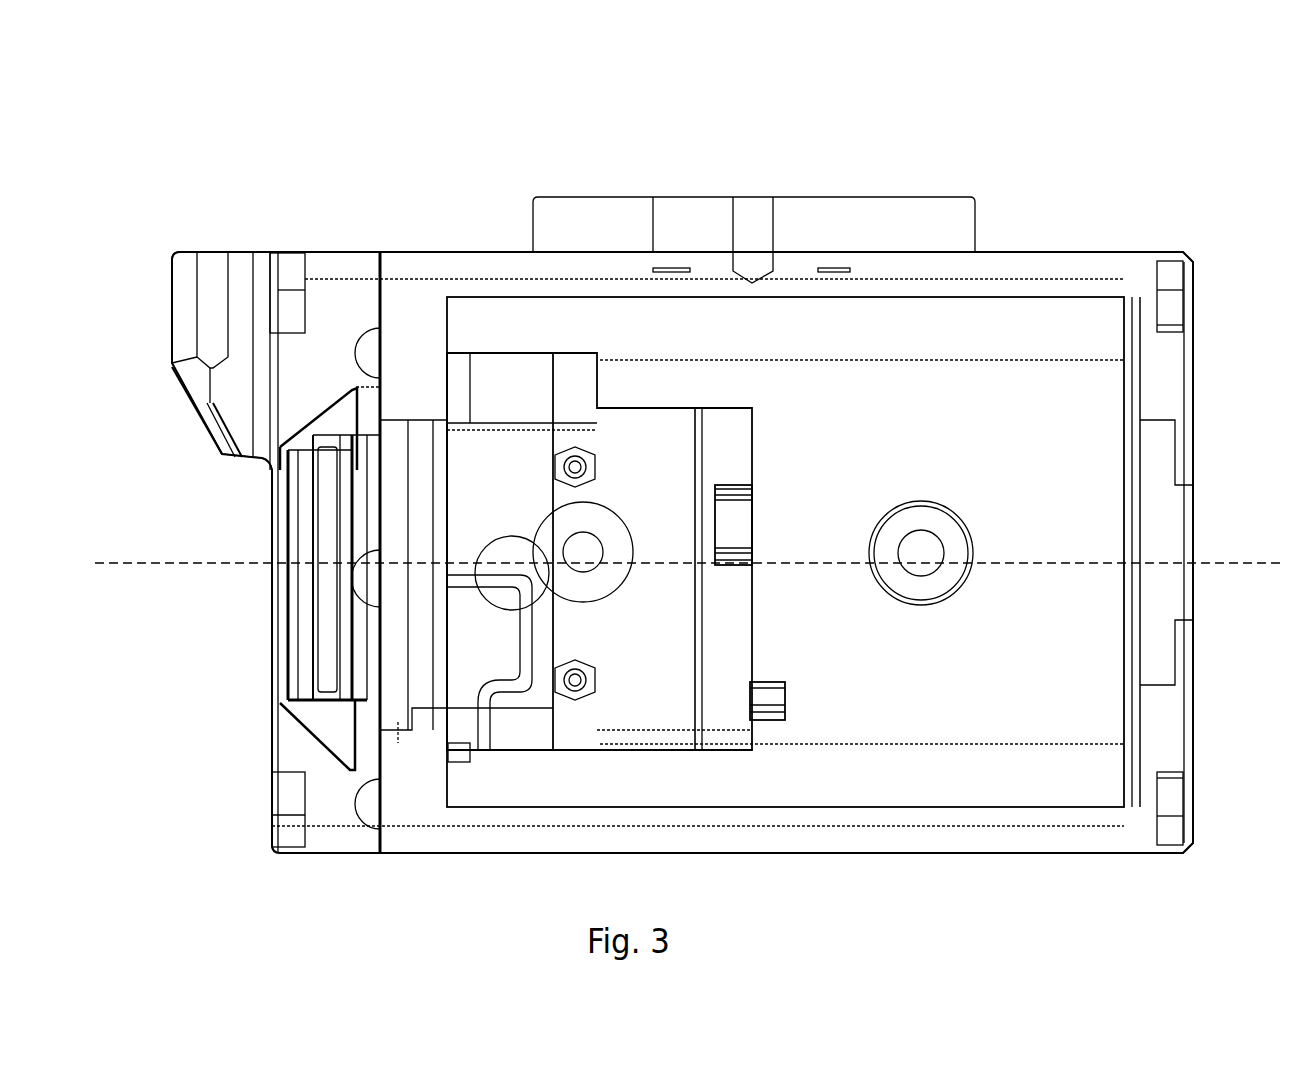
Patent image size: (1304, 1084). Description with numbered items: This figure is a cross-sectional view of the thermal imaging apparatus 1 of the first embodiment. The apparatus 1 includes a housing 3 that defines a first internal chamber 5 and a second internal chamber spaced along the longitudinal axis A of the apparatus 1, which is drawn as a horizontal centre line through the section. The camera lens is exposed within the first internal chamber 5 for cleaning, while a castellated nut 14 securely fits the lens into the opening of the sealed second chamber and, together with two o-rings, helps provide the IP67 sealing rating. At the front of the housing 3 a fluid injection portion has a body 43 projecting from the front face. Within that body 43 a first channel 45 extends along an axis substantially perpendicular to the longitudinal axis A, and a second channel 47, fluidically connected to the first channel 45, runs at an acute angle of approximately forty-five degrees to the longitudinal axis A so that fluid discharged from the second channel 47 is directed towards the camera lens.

The thermal imaging apparatus 1 is at (470, 222).
The housing 3 is at (830, 255).
The first internal chamber 5 is at (320, 353).
The castellated nut 14 is at (307, 710).
The body 43 is at (188, 280).
The first channel 45 is at (215, 313).
The second channel 47 is at (190, 410).
The longitudinal axis A is at (672, 568).